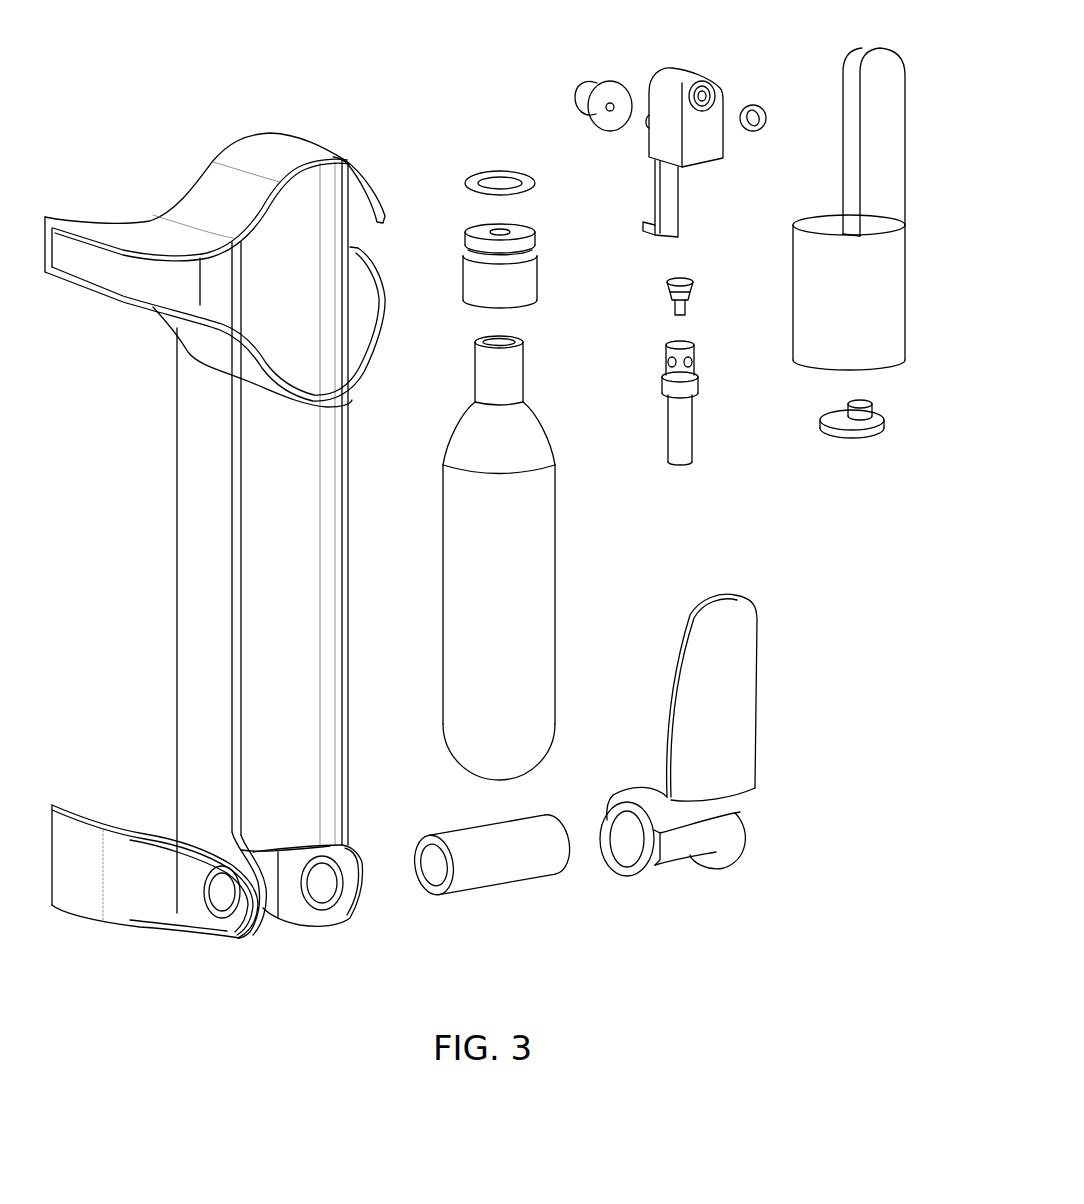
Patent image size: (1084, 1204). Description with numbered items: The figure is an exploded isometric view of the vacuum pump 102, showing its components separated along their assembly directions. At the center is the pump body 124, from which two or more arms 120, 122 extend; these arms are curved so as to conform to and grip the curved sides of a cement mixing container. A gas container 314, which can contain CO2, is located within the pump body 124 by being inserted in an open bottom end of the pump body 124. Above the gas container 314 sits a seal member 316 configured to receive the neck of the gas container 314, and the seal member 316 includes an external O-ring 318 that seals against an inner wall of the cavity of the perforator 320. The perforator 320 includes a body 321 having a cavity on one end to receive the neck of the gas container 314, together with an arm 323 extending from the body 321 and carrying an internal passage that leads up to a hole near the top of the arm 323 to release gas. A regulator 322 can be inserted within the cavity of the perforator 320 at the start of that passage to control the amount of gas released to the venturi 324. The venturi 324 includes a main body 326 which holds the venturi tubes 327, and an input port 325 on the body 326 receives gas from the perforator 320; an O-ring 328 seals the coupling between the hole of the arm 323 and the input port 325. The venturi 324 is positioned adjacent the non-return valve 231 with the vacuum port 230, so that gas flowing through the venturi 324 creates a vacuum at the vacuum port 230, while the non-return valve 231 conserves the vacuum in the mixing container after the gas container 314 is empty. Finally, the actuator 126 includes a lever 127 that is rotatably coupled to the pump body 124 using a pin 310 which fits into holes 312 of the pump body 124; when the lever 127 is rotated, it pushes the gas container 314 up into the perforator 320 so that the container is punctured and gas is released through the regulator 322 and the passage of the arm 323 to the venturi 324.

The vacuum pump 102 is at (200, 42).
The arm 120 is at (90, 903).
The arm 122 is at (294, 150).
The pump body 124 is at (190, 561).
The actuator 126 is at (740, 716).
The lever 127 is at (740, 758).
The vacuum port 230 is at (570, 96).
The non-return valve 231 is at (608, 80).
The pin 310 is at (505, 873).
The holes 312 is at (325, 888).
The gas container 314 is at (556, 594).
The seal member 316 is at (538, 270).
The external O-ring 318 is at (536, 183).
The perforator 320 is at (793, 290).
The body 321 is at (868, 366).
The regulator 322 is at (836, 415).
The arm 323 is at (892, 126).
The venturi 324 is at (708, 62).
The input port 325 is at (718, 92).
The main body 326 is at (702, 164).
The venturi tubes 327 is at (655, 278).
The O-ring 328 is at (762, 132).